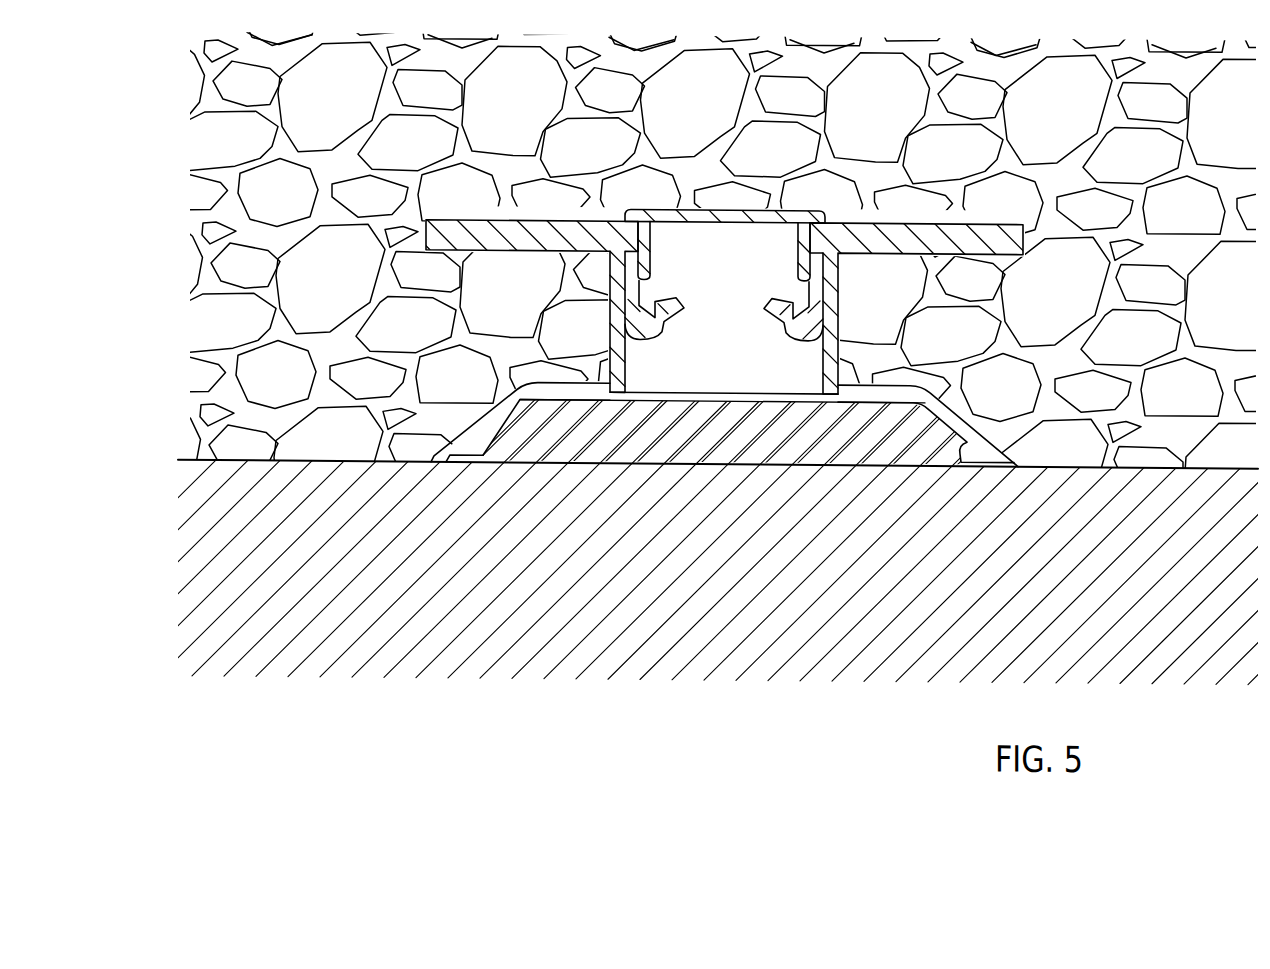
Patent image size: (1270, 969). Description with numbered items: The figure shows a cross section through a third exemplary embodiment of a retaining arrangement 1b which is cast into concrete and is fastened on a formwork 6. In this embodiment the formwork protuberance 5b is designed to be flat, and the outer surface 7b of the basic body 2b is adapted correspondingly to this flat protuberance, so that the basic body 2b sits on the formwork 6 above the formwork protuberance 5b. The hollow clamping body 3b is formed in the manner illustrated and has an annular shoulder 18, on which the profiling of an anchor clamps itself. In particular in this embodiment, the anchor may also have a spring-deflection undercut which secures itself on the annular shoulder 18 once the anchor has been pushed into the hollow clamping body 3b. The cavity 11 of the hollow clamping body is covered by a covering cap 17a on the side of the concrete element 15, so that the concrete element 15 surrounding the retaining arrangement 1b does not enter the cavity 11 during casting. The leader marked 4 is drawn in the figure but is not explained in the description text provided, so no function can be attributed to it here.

The retaining arrangement 1b is at (902, 285).
The basic body 2b is at (833, 344).
The hollow clamping body 3b is at (676, 257).
The foot of sealing strip 4 is at (482, 441).
The formwork protuberance 5b is at (805, 446).
The formwork 6 is at (855, 595).
The outer surface 7b is at (585, 396).
The cavity 11 is at (740, 328).
The concrete element 15 is at (1018, 72).
The covering cap 17a is at (776, 210).
The annular shoulder 18 is at (662, 324).